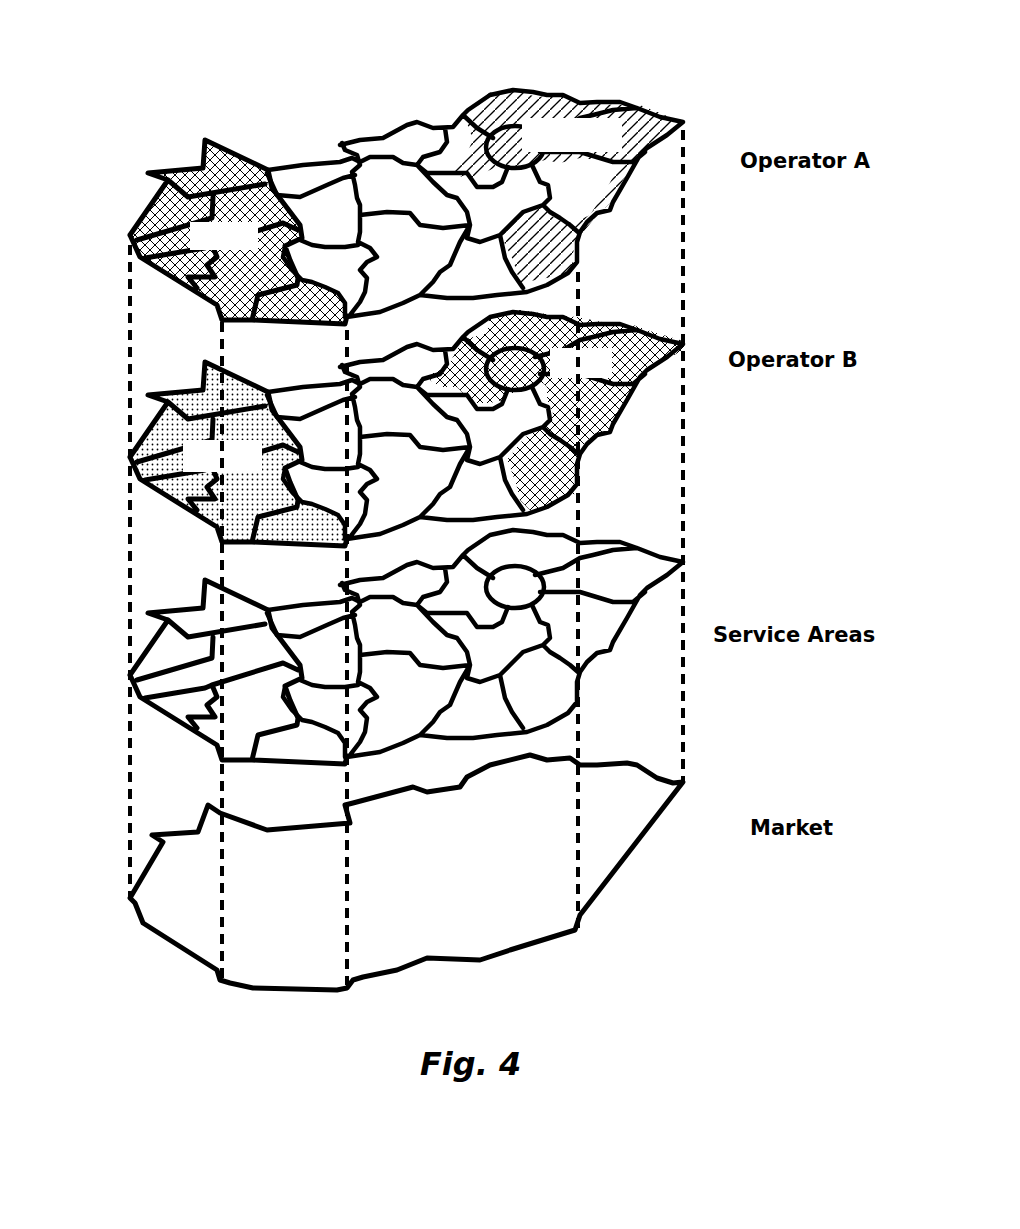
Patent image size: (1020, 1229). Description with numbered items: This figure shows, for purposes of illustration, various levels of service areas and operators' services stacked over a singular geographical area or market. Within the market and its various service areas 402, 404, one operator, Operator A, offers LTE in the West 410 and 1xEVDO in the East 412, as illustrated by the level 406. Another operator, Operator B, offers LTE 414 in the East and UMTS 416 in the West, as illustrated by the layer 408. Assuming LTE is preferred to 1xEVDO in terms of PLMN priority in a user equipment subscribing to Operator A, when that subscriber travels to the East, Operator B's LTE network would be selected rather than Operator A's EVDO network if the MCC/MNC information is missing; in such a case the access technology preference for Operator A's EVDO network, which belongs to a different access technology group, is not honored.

The service areas 402 is at (133, 906).
The service areas 404 is at (133, 686).
The level 406 is at (130, 237).
The layer 408 is at (136, 478).
The LTE 410 is at (240, 216).
The 1xEVDO 412 is at (612, 128).
The LTE 414 is at (610, 356).
The UMTS 416 is at (190, 448).